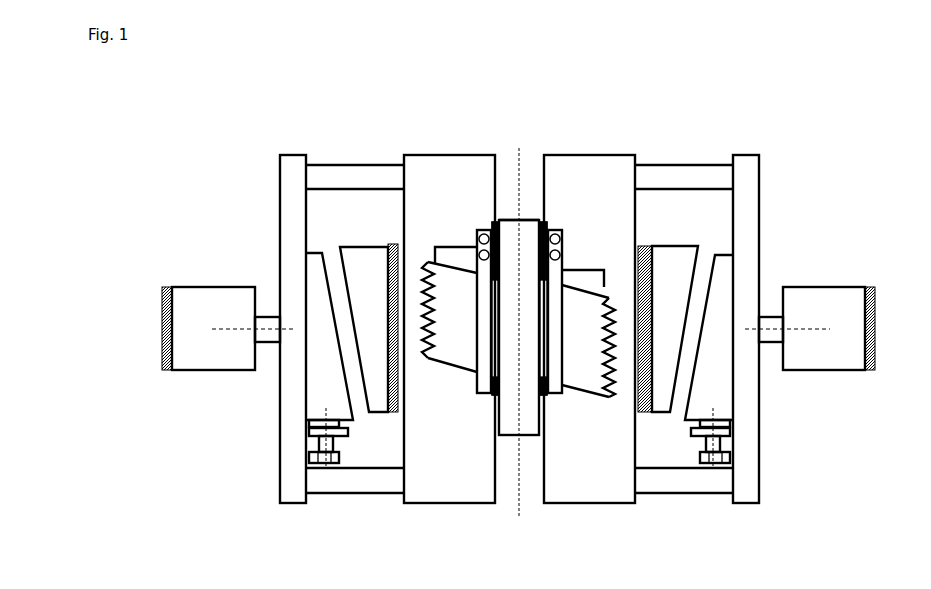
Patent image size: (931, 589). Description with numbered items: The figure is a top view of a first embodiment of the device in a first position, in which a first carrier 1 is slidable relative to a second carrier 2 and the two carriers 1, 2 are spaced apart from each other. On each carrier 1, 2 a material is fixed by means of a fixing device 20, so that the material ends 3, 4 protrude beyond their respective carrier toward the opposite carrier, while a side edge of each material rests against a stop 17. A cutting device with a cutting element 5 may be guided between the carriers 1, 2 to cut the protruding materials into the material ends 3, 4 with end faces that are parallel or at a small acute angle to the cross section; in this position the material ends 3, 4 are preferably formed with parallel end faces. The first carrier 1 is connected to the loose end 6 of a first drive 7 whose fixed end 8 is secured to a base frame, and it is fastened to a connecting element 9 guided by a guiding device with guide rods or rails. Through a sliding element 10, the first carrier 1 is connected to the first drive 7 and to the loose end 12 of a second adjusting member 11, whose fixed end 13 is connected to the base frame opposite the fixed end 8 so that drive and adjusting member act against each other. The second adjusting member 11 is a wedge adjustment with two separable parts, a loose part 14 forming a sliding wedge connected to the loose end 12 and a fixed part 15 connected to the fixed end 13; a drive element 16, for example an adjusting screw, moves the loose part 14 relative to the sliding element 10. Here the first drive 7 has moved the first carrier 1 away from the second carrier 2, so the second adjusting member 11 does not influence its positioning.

The first carrier 1 is at (463, 162).
The second carrier 2 is at (588, 163).
The material end 3 is at (498, 304).
The material end 4 is at (543, 320).
The cutting element 5 is at (505, 218).
The loose end 6 is at (267, 314).
The first drive 7 is at (518, 328).
The fixed end 8 is at (166, 380).
The connecting element 9 is at (363, 496).
The sliding element 10 is at (288, 506).
The second adjusting member 11 is at (315, 249).
The loose end 12 is at (299, 293).
The fixed end 13 is at (391, 242).
The loose part 14 is at (308, 250).
The fixed part 15 is at (365, 244).
The drive element 16 is at (306, 447).
The stop 17 is at (463, 254).
The fixing device 20 is at (485, 397).